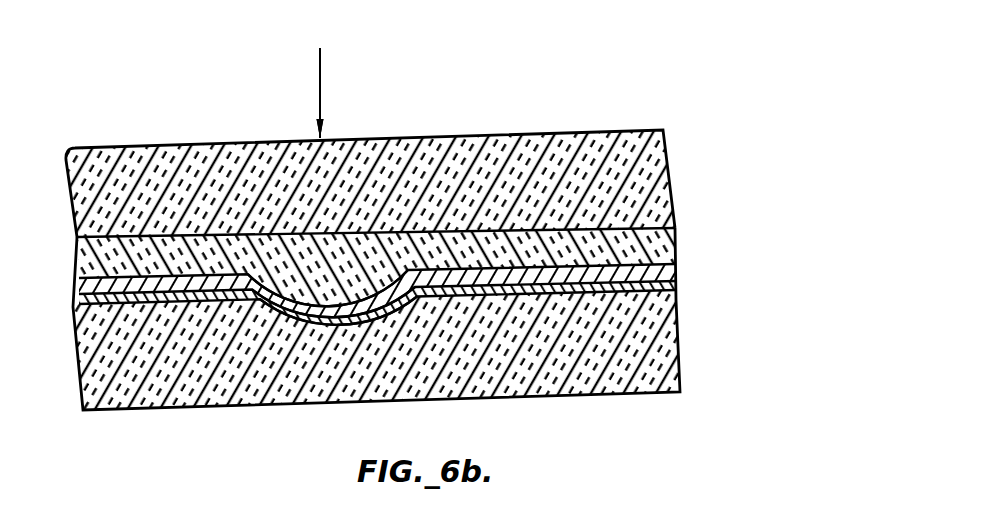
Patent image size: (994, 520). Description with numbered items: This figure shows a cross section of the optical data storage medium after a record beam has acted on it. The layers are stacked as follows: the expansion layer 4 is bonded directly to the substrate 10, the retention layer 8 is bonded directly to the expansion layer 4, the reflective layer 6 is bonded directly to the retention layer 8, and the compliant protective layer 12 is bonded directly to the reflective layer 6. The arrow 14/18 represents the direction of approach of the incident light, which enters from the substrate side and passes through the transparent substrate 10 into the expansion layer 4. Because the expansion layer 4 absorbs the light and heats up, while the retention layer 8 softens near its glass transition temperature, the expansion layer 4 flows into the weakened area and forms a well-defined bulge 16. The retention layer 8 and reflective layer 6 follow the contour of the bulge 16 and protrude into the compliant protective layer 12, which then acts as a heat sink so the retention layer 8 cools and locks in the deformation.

The expansion layer 4 is at (677, 241).
The reflective layer 6 is at (677, 288).
The retention layer 8 is at (677, 270).
The substrate 10 is at (655, 178).
The compliant protective layer 12 is at (660, 333).
The arrow / beam 14 is at (321, 78).
The bulge 16 is at (335, 297).
The arrow / beam 18 is at (345, 72).